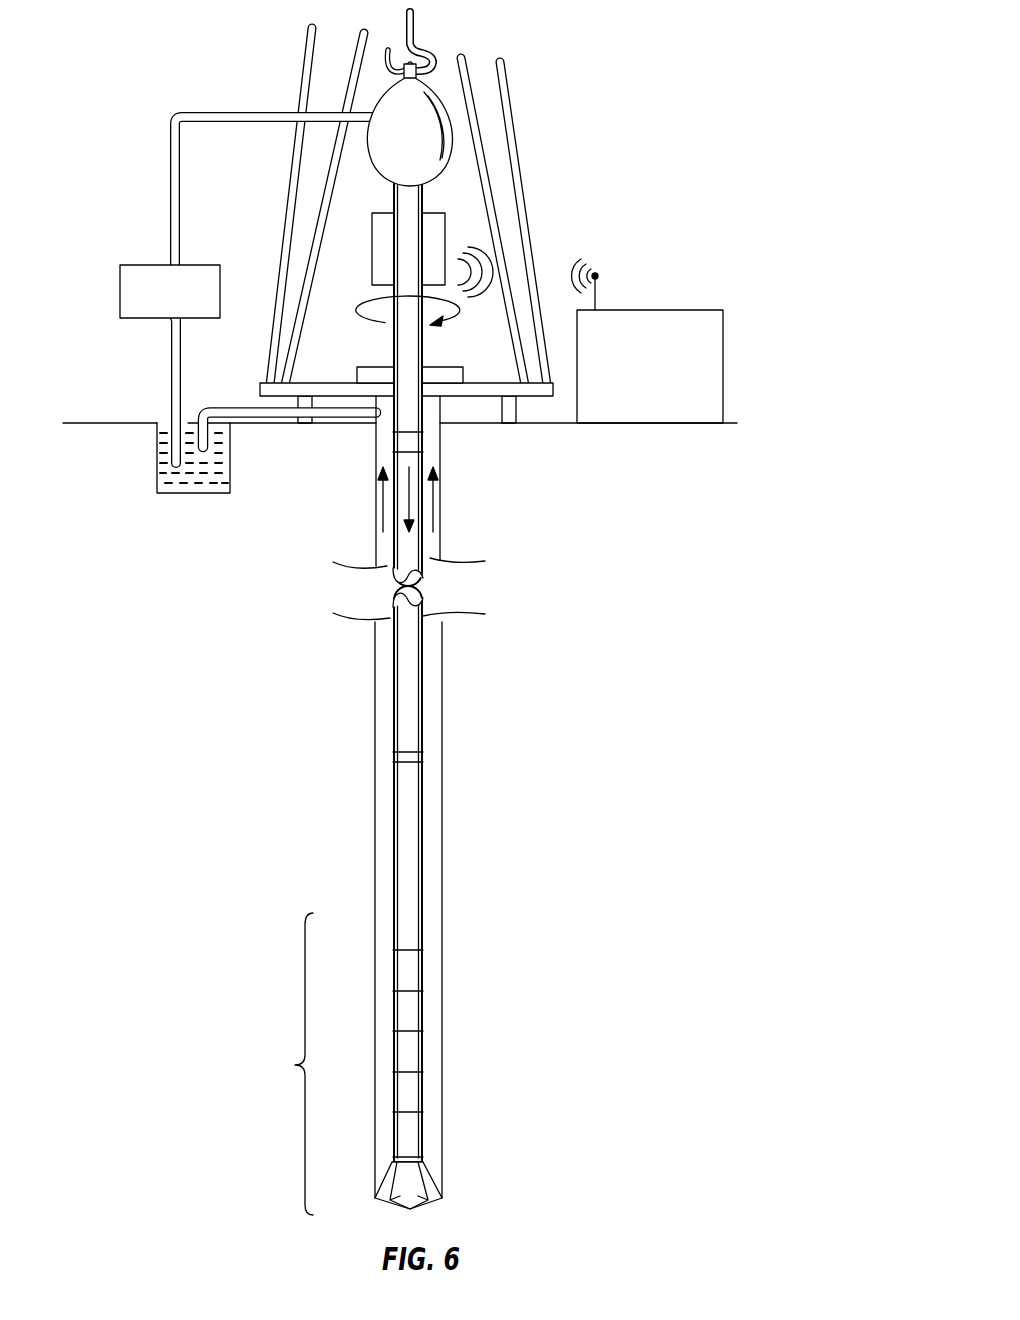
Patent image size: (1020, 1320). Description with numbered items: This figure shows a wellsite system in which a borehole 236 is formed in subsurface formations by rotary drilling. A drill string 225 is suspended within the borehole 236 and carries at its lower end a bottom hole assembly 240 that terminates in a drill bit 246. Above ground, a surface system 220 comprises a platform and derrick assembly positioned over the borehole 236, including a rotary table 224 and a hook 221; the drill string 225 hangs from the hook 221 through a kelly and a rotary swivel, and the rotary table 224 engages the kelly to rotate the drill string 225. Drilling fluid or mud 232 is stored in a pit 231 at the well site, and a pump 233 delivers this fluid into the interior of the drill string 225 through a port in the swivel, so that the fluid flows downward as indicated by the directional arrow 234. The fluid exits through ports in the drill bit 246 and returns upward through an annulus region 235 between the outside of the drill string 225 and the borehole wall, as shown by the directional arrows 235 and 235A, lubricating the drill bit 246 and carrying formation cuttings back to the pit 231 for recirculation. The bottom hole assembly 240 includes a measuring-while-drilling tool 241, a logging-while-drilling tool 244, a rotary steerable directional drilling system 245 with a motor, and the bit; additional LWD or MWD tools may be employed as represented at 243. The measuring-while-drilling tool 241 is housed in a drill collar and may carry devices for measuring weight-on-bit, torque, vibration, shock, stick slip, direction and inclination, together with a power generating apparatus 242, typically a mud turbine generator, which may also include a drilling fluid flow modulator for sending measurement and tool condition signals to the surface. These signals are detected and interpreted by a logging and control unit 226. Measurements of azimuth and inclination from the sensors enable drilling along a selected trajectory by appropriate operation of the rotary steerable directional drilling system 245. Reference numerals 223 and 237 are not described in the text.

The surface system 220 is at (534, 78).
The hook 221 is at (417, 24).
The drill string 223 is at (408, 344).
The rotary table 224 is at (433, 410).
The drill string 225 is at (404, 412).
The logging and control unit 226 is at (637, 308).
The pit 231 is at (190, 492).
The drilling fluid or mud 232 is at (159, 415).
The pump 233 is at (141, 320).
The directional arrow 234 is at (410, 507).
The annulus region 235 is at (383, 518).
The directional arrow 235A is at (435, 494).
The borehole 236 is at (437, 374).
The wellbore 237 is at (456, 682).
The bottom hole assembly 240 is at (278, 1064).
The measuring-while-drilling tool 241 is at (408, 972).
The power generating apparatus 242 is at (408, 1012).
The additional LWD and/or MWD tool 243 is at (408, 1053).
The logging-while-drilling tool 244 is at (408, 1095).
The rotary steerable directional drilling system 245 is at (408, 1140).
The drill bit 246 is at (408, 1183).